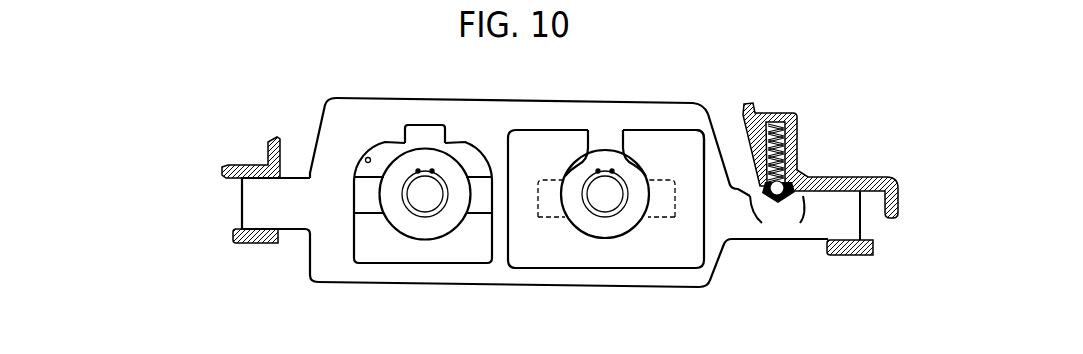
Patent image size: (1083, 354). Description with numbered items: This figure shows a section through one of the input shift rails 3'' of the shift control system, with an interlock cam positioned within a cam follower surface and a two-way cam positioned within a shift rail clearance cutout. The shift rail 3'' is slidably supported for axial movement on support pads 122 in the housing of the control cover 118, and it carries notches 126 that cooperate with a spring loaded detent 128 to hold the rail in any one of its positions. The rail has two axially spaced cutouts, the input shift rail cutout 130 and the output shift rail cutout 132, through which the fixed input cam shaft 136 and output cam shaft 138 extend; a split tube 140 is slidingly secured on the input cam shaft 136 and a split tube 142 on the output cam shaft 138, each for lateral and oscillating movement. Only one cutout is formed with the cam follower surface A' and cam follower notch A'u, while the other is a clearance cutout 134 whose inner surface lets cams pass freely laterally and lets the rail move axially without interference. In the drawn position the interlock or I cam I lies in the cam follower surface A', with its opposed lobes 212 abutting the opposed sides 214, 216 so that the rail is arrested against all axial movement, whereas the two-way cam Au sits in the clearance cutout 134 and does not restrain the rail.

The shift rail 3'' is at (551, 176).
The control cover 118 is at (236, 163).
The support pads 122 is at (250, 244).
The notches 126 is at (777, 203).
The spring loaded detent 128 is at (792, 180).
The input shift rail cutout 130 is at (387, 152).
The output shift rail cutout 132 is at (687, 165).
The clearance cutout 134 is at (550, 132).
The input cam shaft 136 is at (417, 197).
The output cam shaft 138 is at (613, 202).
The split tube 140 is at (411, 216).
The split tube 142 is at (593, 220).
The lobes 212 is at (366, 201).
The opposed side of cam follower surface 214 is at (352, 192).
The opposed side of cam follower surface 216 is at (494, 186).
The cam follower surface A' is at (347, 150).
The cam follower notch A'u is at (415, 105).
The two-way cam Au is at (607, 138).
The interlock cam I is at (439, 166).